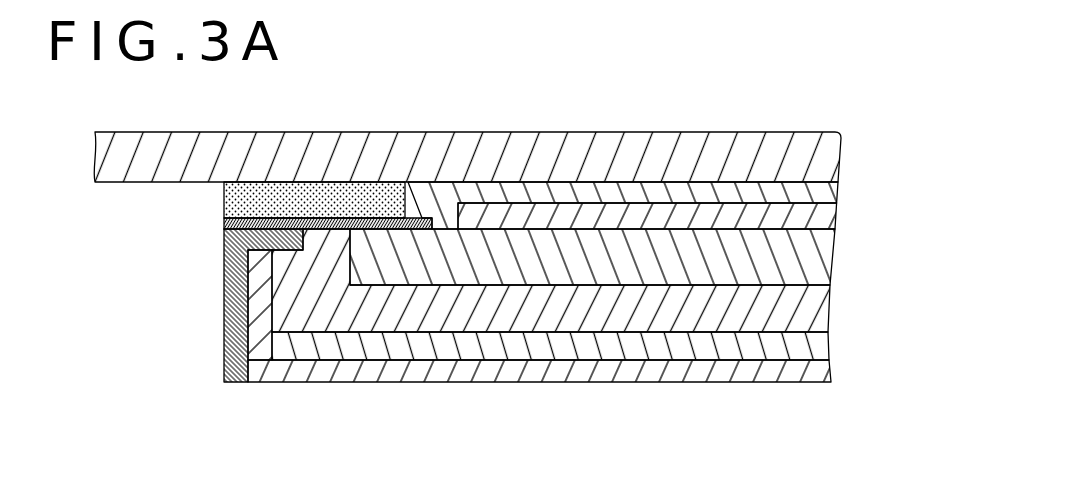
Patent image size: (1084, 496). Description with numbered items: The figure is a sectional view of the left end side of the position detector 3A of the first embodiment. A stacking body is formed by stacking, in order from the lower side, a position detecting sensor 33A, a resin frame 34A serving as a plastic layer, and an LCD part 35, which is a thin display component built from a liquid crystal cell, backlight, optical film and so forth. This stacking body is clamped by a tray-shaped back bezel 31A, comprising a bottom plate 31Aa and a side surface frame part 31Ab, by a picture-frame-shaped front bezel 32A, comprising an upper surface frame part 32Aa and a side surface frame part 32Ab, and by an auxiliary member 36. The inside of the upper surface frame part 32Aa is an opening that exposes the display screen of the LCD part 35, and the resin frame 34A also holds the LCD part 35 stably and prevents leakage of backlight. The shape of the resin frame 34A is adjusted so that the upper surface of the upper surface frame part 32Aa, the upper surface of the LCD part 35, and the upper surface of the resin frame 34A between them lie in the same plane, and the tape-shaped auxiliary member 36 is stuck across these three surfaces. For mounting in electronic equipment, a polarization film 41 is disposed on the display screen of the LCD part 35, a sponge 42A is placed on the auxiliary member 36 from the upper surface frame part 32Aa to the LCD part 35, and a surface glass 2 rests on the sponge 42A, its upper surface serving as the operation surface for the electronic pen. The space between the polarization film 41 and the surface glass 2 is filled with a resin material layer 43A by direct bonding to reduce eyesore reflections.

The surface glass 2 is at (492, 136).
The position detector 3A is at (183, 357).
The back bezel 31A is at (527, 373).
The bottom plate 31Aa is at (328, 370).
The side surface frame part 31Ab is at (261, 347).
The front bezel 32A is at (179, 305).
The upper surface frame part 32Aa is at (223, 247).
The side surface frame part 32Ab is at (223, 312).
The position detecting sensor 33A is at (823, 347).
The resin frame 34A is at (823, 307).
The LCD part 35 is at (822, 260).
The auxiliary member 36 is at (224, 222).
The polarization film 41 is at (835, 216).
The sponge 42A is at (222, 208).
The resin material layer 43A is at (832, 195).